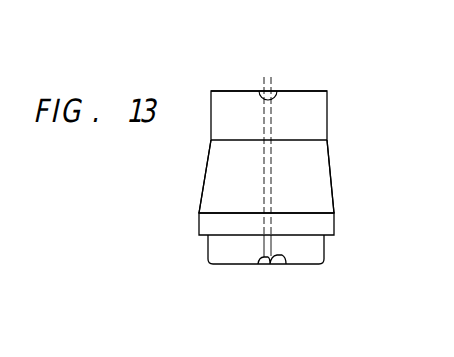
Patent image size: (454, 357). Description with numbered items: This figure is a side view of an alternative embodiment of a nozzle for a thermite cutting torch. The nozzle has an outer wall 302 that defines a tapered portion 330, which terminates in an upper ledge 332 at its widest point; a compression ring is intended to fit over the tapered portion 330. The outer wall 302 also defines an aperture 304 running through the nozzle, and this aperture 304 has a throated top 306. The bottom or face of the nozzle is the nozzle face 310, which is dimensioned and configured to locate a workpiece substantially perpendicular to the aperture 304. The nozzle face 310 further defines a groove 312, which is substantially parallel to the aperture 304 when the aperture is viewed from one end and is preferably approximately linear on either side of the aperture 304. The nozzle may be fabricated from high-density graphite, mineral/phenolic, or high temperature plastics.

The outer wall 302 is at (316, 192).
The aperture 304 is at (273, 170).
The throated top 306 is at (287, 264).
The nozzle face 310 is at (231, 97).
The groove 312 is at (271, 97).
The tapered portion 330 is at (207, 171).
The upper ledge 332 is at (207, 236).